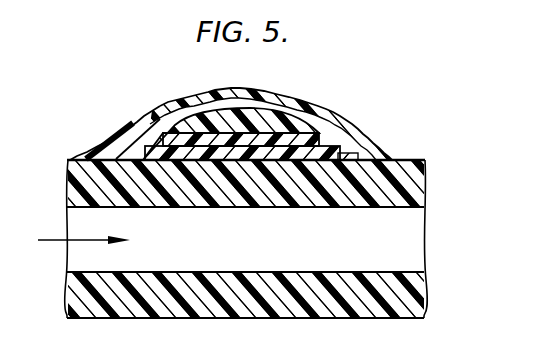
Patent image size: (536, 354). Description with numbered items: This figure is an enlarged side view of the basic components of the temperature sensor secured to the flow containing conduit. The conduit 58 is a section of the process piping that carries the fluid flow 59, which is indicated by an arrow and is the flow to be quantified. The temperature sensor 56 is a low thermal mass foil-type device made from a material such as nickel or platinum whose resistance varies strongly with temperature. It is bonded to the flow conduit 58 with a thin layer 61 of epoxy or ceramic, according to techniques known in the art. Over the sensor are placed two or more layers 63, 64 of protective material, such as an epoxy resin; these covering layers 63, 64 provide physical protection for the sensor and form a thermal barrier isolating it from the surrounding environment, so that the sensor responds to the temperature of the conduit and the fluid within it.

The temperature sensor 56 is at (320, 131).
The conduit 58 is at (412, 190).
The fluid flow 59 is at (62, 241).
The thin layer of epoxy or ceramic 61 is at (346, 153).
The protective layer 63 is at (294, 104).
The protective layer 64 is at (133, 126).